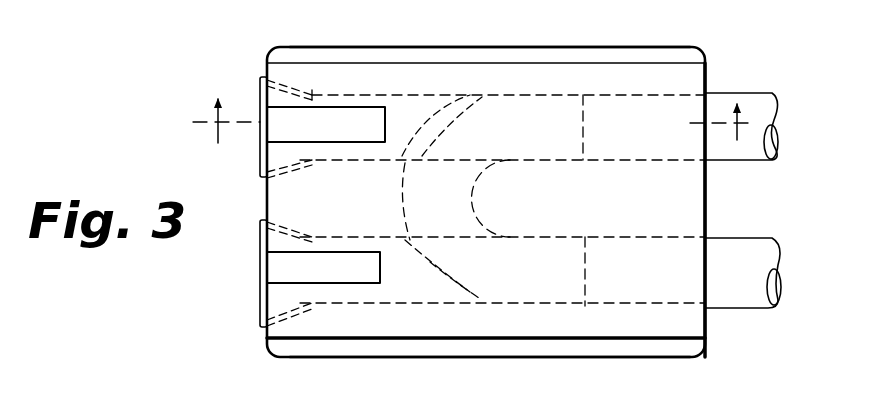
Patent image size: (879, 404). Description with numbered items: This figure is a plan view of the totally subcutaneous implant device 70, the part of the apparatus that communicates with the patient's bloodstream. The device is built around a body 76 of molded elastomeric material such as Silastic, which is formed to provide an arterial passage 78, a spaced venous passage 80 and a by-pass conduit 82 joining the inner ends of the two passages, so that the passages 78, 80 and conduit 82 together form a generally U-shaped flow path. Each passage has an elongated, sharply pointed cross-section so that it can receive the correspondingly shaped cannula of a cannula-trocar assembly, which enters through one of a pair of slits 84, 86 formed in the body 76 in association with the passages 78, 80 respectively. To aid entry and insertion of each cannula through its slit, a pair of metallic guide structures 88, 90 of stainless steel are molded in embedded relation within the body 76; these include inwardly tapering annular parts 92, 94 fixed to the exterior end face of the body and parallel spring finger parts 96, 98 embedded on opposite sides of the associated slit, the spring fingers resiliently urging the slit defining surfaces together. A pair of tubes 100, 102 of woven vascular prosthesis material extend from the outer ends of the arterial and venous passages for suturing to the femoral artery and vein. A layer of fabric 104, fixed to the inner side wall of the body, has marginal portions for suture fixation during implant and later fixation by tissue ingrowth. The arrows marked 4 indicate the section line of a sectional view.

The implant device 70 is at (262, 44).
The body 76 is at (417, 62).
The layer of fabric 104 is at (541, 47).
The slit 86 is at (372, 300).
The guide structure 88 is at (255, 75).
The inwardly tapering annular part 92 is at (262, 175).
The inwardly tapering annular part 94 is at (262, 294).
The guide structure 90 is at (256, 329).
The spring finger part 96 is at (385, 126).
The spring finger part 98 is at (382, 270).
The slit 84 is at (376, 98).
The by-pass conduit 82 is at (408, 180).
The arterial passage 78 is at (583, 95).
The venous passage 80 is at (562, 320).
The tube 100 is at (758, 92).
The tube 102 is at (742, 300).
The section line 4 is at (474, 135).